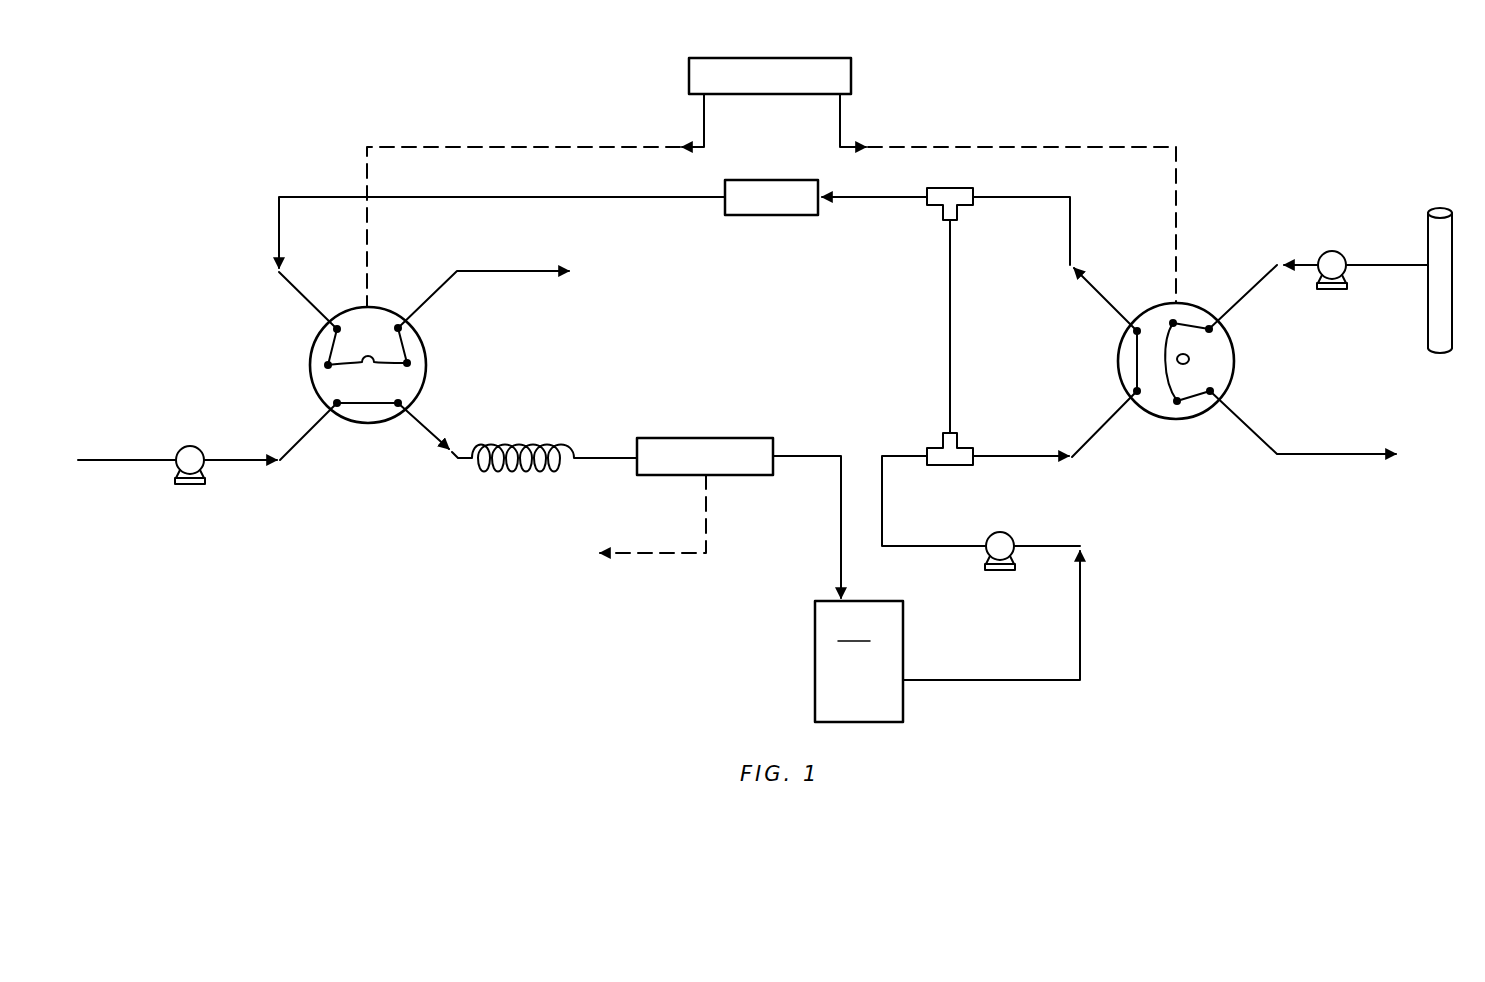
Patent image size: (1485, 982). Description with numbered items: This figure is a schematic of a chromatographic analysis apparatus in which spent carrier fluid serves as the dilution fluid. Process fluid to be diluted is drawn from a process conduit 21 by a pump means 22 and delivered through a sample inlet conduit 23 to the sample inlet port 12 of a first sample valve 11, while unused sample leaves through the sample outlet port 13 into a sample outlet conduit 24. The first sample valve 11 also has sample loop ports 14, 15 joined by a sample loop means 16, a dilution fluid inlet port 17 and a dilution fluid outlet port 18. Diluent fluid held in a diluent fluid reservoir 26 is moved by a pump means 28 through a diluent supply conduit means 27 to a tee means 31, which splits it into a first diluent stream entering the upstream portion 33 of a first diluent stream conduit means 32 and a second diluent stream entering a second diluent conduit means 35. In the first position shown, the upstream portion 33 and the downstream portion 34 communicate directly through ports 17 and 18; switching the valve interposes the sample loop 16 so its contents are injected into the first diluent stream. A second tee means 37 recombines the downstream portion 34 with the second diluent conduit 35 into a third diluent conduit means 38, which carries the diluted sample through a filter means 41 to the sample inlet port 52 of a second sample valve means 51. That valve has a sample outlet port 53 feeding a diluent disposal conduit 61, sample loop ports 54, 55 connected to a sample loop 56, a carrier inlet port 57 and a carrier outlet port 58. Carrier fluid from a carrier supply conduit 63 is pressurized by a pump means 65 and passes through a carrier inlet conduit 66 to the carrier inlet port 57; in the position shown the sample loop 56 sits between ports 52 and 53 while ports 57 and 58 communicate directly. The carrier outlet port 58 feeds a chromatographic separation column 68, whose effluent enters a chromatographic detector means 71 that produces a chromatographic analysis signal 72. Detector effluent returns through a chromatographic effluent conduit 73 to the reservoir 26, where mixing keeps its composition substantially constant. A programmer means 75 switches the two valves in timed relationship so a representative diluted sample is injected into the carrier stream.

The first sample valve 11 is at (1153, 305).
The sample inlet port 12 is at (1216, 328).
The sample outlet port 13 is at (1216, 390).
The sample loop port 14 is at (1178, 319).
The sample loop port 15 is at (1178, 406).
The sample loop means 16 is at (1179, 365).
The dilution fluid inlet port 17 is at (1130, 393).
The dilution fluid outlet port 18 is at (1130, 331).
The process conduit 21 is at (1430, 241).
The pump means 22 is at (1335, 254).
The sample inlet conduit 23 is at (1259, 276).
The sample outlet conduit 24 is at (1311, 454).
The diluent fluid reservoir 26 is at (859, 661).
The diluent supply conduit means 27 is at (1082, 582).
The pump means 28 is at (1010, 535).
The tee means 31 is at (934, 446).
The first diluent stream conduit means 32 is at (1074, 422).
The upstream portion of first diluent conduit 33 is at (1096, 436).
The downstream portion of first diluent conduit 34 is at (1070, 231).
The second diluent conduit means 35 is at (950, 375).
The second tee means 37 is at (952, 189).
The third diluent conduit means 38 is at (515, 197).
The filter means 41 is at (722, 186).
The second sample valve means 51 is at (312, 360).
The sample inlet port 52 is at (324, 331).
The sample outlet port 53 is at (410, 328).
The sample loop port 54 is at (320, 365).
The sample loop port 55 is at (412, 363).
The sample loop 56 is at (385, 356).
The carrier inlet port 57 is at (330, 403).
The carrier outlet port 58 is at (400, 403).
The diluent disposal conduit 61 is at (472, 271).
The carrier supply conduit 63 is at (137, 458).
The pump means 65 is at (202, 452).
The carrier inlet conduit 66 is at (310, 438).
The chromatographic separation column 68 is at (525, 448).
The chromatographic detector means 71 is at (743, 438).
The chromatographic analysis signal 72 is at (658, 556).
The chromatographic effluent conduit 73 is at (800, 456).
The programmer means 75 is at (851, 88).